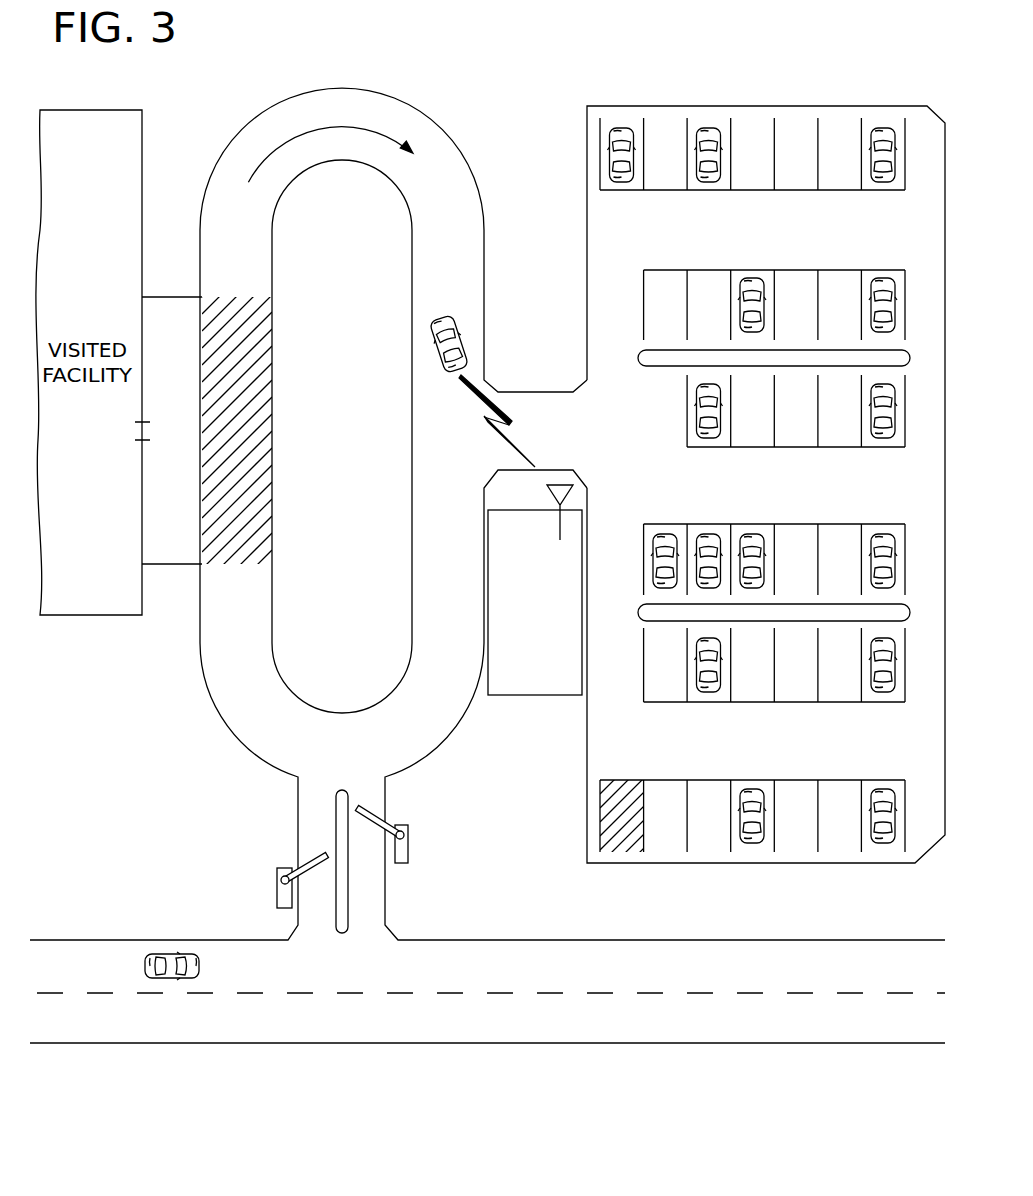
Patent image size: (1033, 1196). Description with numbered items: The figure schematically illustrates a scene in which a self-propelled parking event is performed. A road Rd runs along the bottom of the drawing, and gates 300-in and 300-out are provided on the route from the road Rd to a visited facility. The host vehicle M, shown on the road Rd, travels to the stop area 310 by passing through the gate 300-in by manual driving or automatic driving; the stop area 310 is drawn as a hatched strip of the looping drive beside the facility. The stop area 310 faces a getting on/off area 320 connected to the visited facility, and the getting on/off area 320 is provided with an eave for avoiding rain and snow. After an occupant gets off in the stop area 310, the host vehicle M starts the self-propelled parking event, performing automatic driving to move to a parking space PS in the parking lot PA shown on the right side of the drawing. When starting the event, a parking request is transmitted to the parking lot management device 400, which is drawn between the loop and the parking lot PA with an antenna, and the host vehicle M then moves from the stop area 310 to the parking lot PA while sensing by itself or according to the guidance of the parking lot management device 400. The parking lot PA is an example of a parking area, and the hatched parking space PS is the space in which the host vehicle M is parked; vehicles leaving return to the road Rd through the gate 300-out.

The stop area 310 is at (258, 447).
The getting on/off area 320 is at (195, 398).
The gate 300-in is at (280, 864).
The gate 300-out is at (420, 841).
The parking lot management device 400 is at (530, 697).
The parking lot PA is at (781, 501).
The parking space PS is at (620, 788).
The road Rd is at (386, 978).
The host vehicle M is at (174, 956).